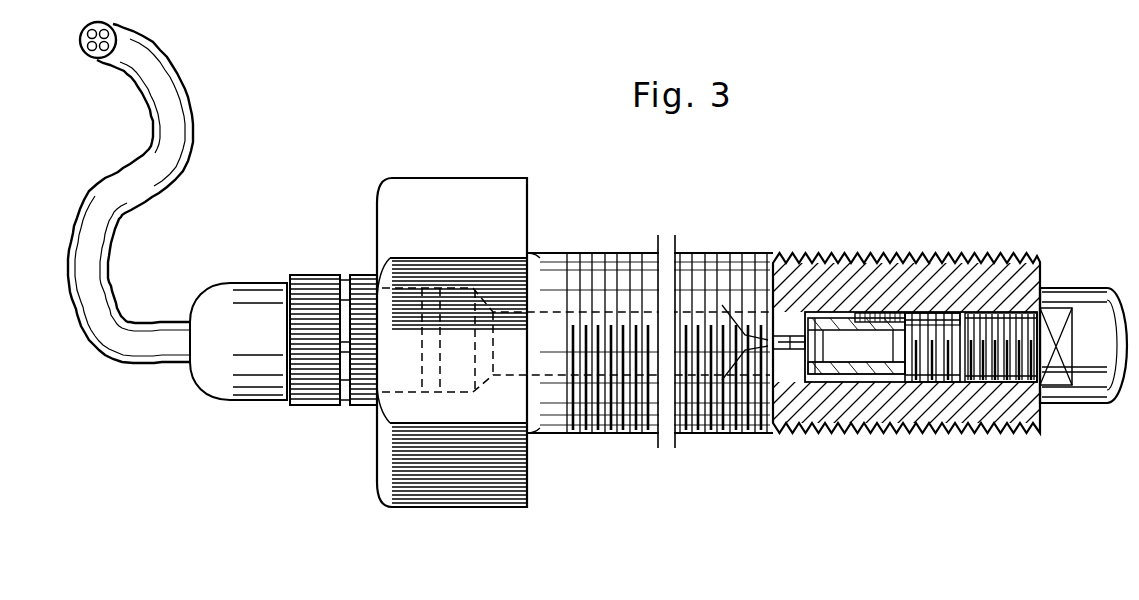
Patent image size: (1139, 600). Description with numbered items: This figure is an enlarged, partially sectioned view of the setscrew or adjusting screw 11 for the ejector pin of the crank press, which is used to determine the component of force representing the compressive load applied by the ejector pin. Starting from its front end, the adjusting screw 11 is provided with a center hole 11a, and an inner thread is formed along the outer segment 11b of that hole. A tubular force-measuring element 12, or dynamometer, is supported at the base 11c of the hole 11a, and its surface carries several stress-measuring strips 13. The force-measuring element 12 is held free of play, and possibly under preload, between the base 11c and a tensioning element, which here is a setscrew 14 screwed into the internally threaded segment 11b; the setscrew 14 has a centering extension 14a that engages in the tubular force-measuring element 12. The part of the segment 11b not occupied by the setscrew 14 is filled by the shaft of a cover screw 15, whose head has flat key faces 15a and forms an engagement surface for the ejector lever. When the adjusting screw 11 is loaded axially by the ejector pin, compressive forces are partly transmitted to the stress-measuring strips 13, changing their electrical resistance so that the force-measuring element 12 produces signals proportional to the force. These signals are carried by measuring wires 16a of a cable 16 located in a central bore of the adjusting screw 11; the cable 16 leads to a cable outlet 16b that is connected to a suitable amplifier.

The adjusting screw 11 is at (690, 418).
The center hole 11a is at (838, 316).
The outer segment 11b is at (873, 312).
The base of the hole 11c is at (808, 322).
The tubular force-measuring element 12 is at (900, 384).
The stress-measuring strips 13 is at (840, 375).
The setscrew 14 is at (917, 384).
The centering extension 14a is at (917, 318).
The cover screw 15 is at (1013, 383).
The key faces 15a is at (1058, 315).
The cable 16 is at (783, 345).
The measuring wires 16a is at (783, 345).
The cable outlet 16b is at (273, 392).